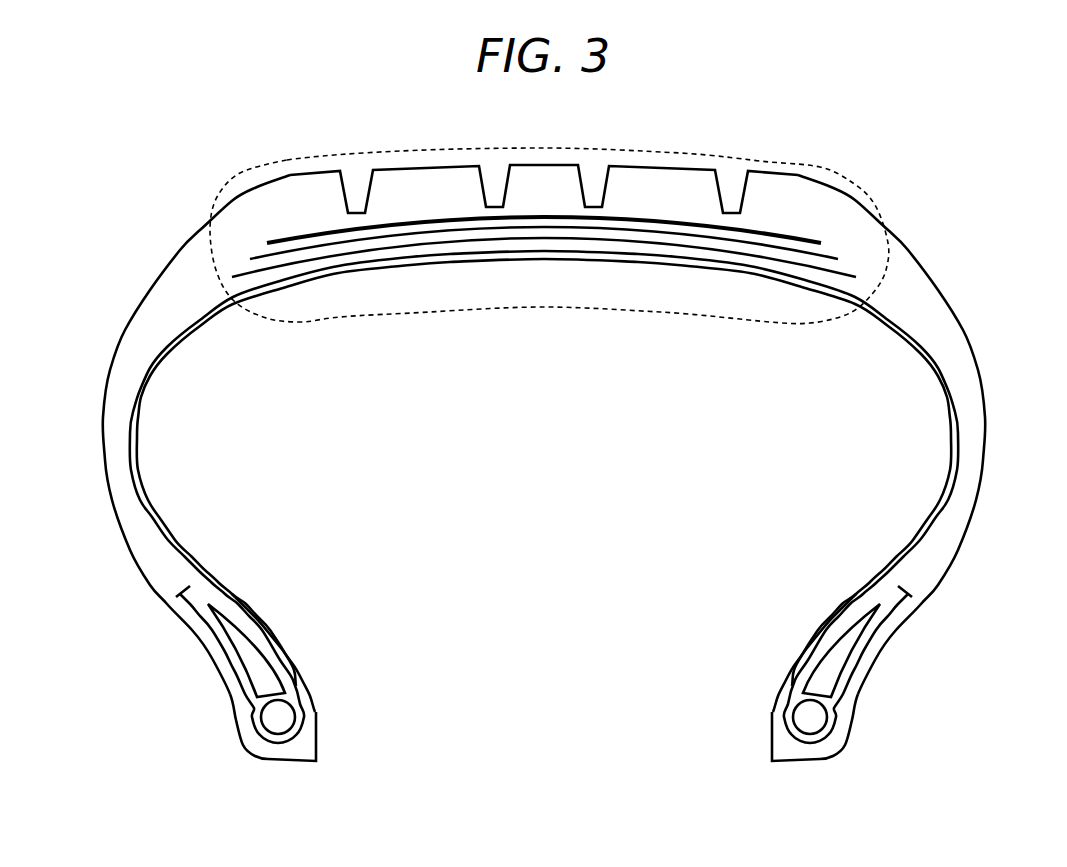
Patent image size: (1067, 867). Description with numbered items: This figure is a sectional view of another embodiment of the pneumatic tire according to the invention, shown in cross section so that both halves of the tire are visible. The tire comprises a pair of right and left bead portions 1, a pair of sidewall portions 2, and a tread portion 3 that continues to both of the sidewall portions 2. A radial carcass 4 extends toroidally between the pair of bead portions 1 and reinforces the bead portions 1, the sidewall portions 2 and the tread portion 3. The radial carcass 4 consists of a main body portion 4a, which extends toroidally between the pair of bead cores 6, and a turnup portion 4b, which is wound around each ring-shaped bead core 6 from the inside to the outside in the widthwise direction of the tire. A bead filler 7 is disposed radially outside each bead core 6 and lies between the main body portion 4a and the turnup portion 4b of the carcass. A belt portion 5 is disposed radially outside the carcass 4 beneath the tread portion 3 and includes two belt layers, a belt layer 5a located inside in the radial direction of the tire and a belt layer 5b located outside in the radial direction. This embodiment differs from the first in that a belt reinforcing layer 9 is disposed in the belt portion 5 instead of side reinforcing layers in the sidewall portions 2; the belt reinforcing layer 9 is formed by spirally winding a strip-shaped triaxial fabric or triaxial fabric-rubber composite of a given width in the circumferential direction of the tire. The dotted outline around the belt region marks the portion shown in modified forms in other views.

The bead portion 1 is at (220, 675).
The sidewall portion 2 is at (103, 430).
The tread portion 3 is at (543, 164).
The radial carcass 4 is at (544, 497).
The main body portion 4a is at (313, 520).
The turnup portion 4b is at (177, 592).
The belt portion 5 is at (544, 172).
The belt layer 5a is at (787, 255).
The belt layer 5b is at (747, 233).
The bead core 6 is at (280, 718).
The bead filler 7 is at (263, 678).
The belt reinforcing layer 9 is at (668, 220).